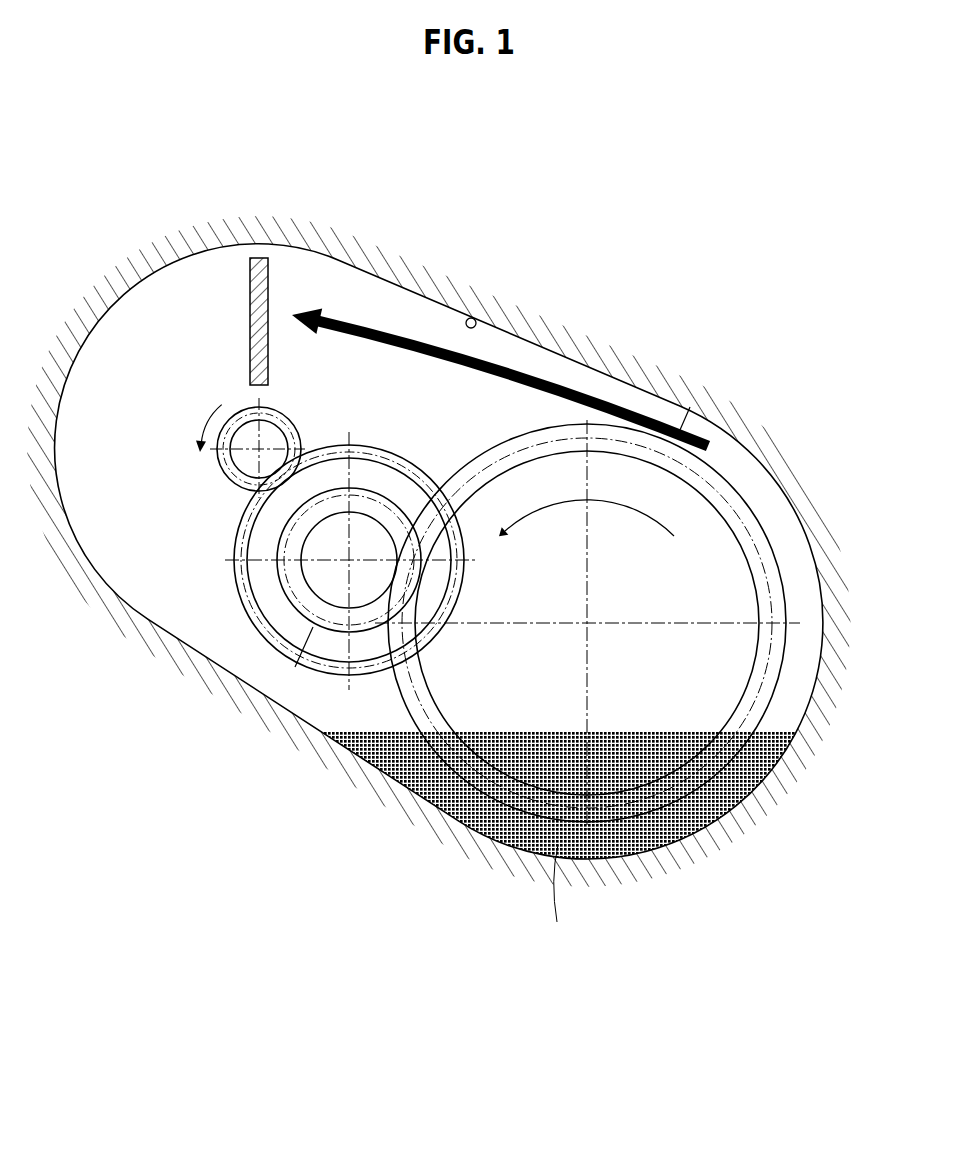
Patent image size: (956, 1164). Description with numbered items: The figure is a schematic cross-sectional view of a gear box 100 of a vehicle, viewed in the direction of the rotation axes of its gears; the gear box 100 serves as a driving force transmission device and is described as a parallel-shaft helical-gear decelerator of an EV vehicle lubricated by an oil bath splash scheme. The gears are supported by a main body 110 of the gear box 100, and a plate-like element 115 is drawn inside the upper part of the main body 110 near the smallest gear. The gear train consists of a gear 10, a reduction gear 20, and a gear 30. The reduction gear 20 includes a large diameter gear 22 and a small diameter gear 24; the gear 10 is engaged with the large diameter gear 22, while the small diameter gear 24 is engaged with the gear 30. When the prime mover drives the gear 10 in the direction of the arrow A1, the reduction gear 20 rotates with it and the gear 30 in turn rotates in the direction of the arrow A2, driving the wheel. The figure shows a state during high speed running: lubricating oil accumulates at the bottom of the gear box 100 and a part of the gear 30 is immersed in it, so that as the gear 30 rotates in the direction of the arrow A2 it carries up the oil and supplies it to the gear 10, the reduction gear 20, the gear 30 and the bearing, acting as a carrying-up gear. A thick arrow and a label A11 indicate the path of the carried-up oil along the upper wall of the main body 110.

The gear box 100 is at (448, 569).
The main body 110 is at (474, 318).
The partition plate 115 is at (250, 318).
The gear 10 is at (270, 407).
The reduction gear 20 is at (384, 440).
The large diameter gear 22 is at (330, 443).
The small diameter gear 24 is at (327, 618).
The gear 30 is at (722, 502).
The arrow A1 is at (203, 427).
The arrow A2 is at (554, 510).
The oil passage gap A11 is at (690, 407).